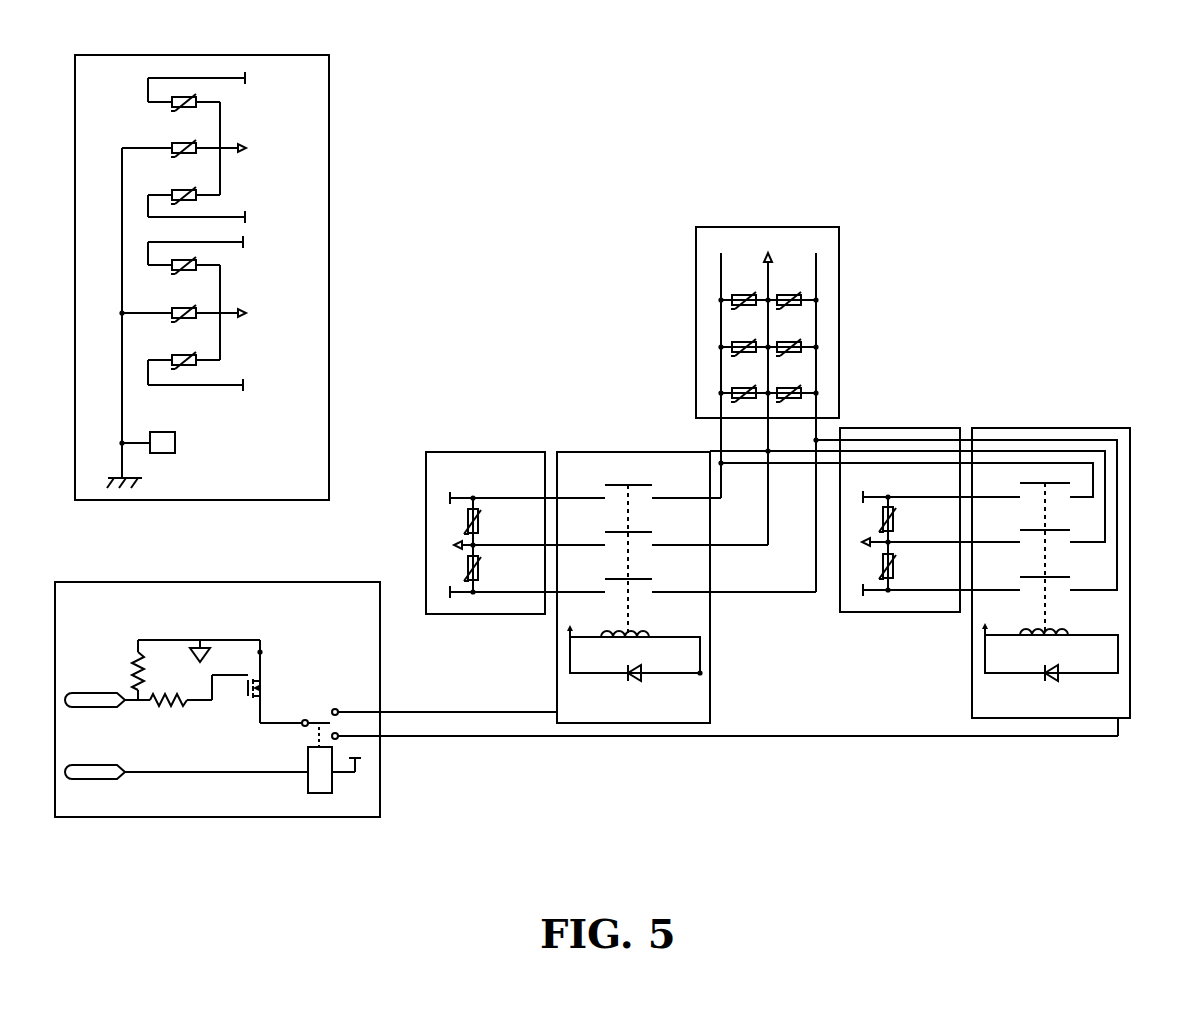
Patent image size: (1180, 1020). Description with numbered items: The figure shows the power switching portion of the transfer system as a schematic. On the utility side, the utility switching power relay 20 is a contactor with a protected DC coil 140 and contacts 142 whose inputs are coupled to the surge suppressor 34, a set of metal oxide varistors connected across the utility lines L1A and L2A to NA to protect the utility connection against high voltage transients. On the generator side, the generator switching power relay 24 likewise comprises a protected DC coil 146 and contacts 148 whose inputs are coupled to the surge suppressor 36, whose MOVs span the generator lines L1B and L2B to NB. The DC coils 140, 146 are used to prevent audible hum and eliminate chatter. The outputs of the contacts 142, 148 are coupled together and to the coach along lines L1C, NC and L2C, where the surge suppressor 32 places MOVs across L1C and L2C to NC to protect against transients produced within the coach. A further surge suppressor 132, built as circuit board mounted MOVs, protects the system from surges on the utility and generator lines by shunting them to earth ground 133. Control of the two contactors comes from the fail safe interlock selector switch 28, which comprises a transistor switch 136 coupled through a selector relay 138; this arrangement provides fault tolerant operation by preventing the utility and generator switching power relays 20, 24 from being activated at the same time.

The surge suppressor 132 is at (336, 121).
The earth ground 133 is at (161, 456).
The interlock selector switch 28 is at (230, 580).
The transistor switch 136 is at (262, 675).
The selector relay 138 is at (320, 716).
The surge suppressor 34 is at (476, 452).
The utility switching power relay 20 is at (614, 452).
The contacts 142 is at (636, 531).
The protected DC coil 140 is at (648, 634).
The surge suppressor 32 is at (774, 226).
The surge suppressor 36 is at (886, 428).
The generator switching power relay 24 is at (1008, 428).
The contacts 148 is at (1052, 528).
The protected DC coil 146 is at (1062, 632).